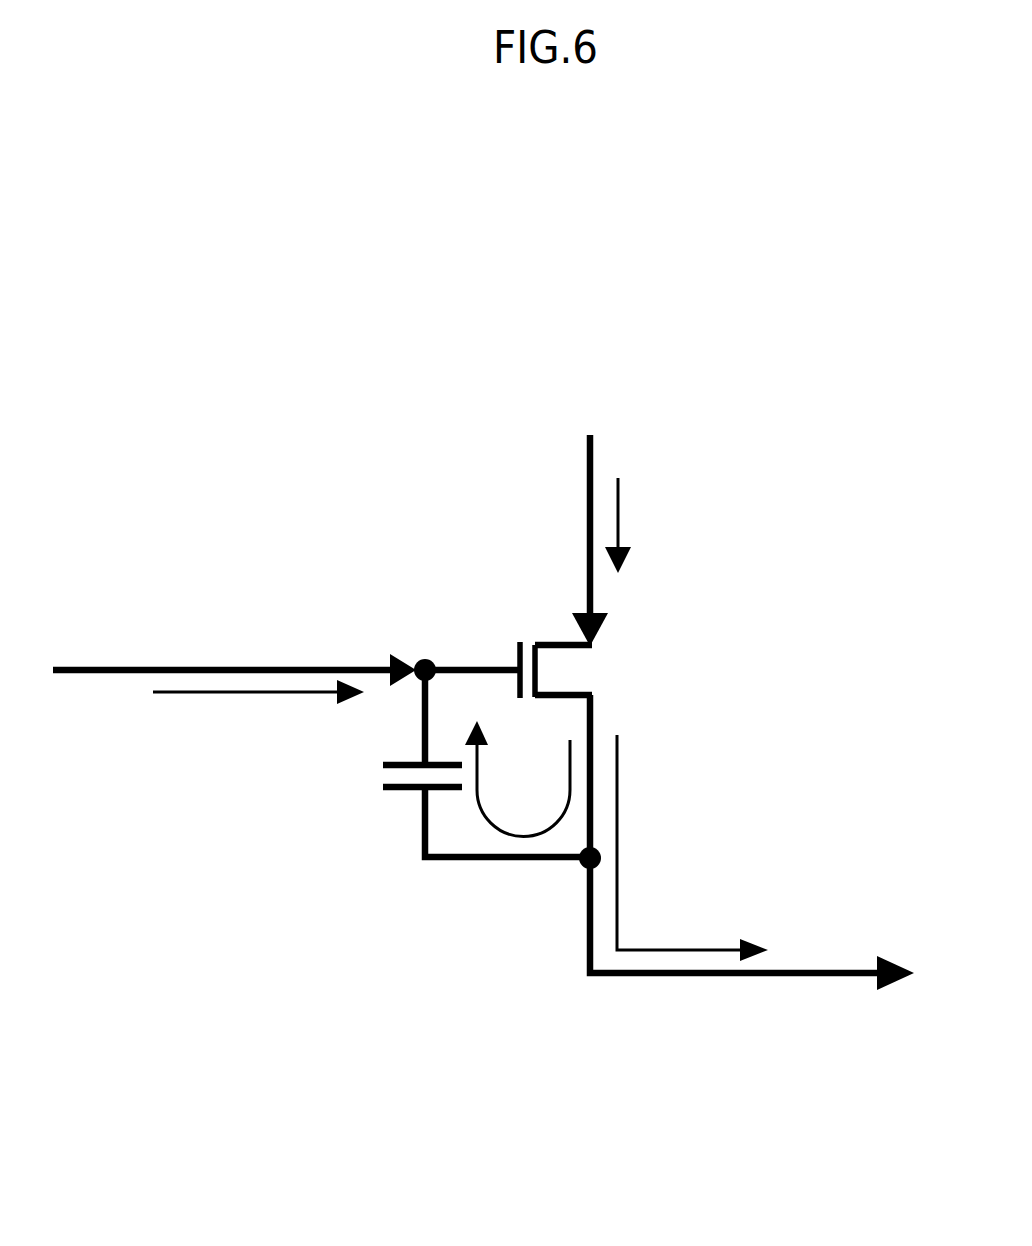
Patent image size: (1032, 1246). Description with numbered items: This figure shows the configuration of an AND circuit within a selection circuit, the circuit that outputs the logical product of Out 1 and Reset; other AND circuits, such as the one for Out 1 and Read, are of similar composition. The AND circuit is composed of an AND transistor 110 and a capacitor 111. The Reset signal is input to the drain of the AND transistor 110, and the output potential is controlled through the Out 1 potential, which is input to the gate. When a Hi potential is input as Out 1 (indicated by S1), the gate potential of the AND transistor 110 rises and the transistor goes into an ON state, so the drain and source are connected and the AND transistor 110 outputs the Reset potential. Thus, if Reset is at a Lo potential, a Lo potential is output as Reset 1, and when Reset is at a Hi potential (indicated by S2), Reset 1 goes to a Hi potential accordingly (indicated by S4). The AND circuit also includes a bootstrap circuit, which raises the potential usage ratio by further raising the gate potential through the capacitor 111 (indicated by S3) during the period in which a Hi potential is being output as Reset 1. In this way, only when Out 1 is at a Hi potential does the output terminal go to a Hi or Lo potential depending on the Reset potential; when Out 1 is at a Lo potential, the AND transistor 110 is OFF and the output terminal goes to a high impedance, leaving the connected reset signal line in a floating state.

The AND transistor 110 is at (598, 668).
The capacitor 111 is at (372, 775).
The Hi potential input as Out 1 S1 is at (258, 709).
The Reset at Hi potential S2 is at (645, 525).
The bootstrap gate potential rise S3 is at (517, 778).
The Reset 1 at Hi potential S4 is at (692, 848).
The Out 1 Out1 is at (285, 652).
The element Reset is at (594, 520).
The Reset 1 Reset1 is at (746, 875).